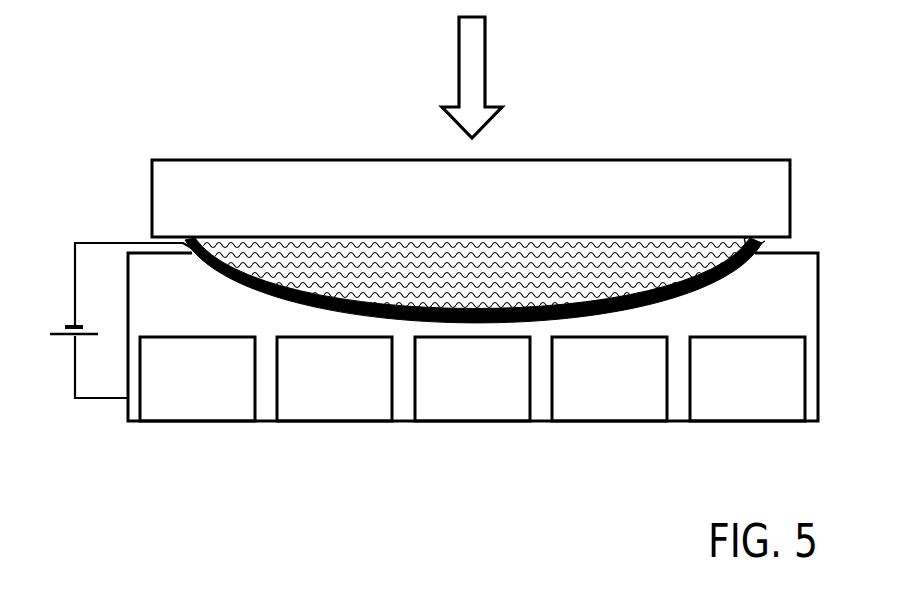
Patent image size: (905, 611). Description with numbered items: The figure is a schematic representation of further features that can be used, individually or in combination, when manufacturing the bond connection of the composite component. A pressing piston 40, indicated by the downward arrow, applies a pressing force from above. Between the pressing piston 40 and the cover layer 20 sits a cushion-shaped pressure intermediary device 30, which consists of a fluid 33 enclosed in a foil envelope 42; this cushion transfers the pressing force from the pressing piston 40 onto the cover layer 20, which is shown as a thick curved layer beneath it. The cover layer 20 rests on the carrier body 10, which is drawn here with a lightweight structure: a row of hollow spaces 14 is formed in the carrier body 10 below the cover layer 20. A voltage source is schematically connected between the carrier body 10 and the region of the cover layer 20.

The carrier body 10 is at (130, 408).
The hollow spaces 14 is at (350, 408).
The cover layer 20 is at (740, 278).
The pressure intermediary device 30 is at (757, 245).
The fluid 33 is at (370, 247).
The pressing piston 40 is at (225, 177).
The foil envelope 42 is at (748, 252).